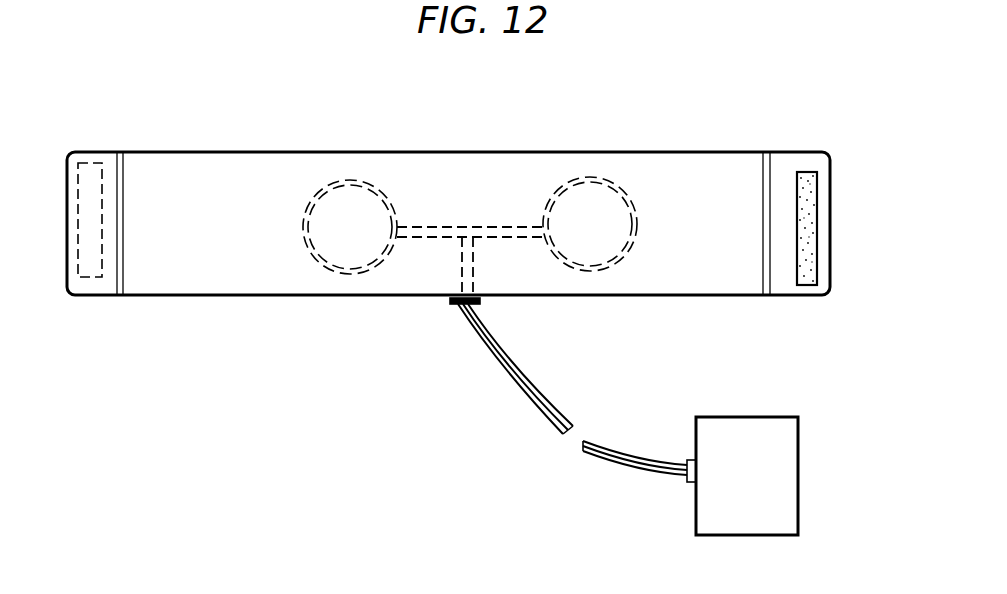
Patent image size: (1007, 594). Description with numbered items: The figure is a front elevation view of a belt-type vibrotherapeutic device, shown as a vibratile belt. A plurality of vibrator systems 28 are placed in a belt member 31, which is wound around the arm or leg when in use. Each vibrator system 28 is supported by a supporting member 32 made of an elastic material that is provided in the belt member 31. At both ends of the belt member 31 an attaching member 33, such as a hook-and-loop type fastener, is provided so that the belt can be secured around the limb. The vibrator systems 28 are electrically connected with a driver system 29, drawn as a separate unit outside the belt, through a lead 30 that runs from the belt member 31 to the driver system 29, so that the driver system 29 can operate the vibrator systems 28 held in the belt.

The vibrator system 28 is at (340, 250).
The driver system 29 is at (780, 415).
The lead 30 is at (532, 407).
The belt member 31 is at (739, 150).
The supporting member 32 is at (378, 192).
The attaching member 33 is at (88, 300).